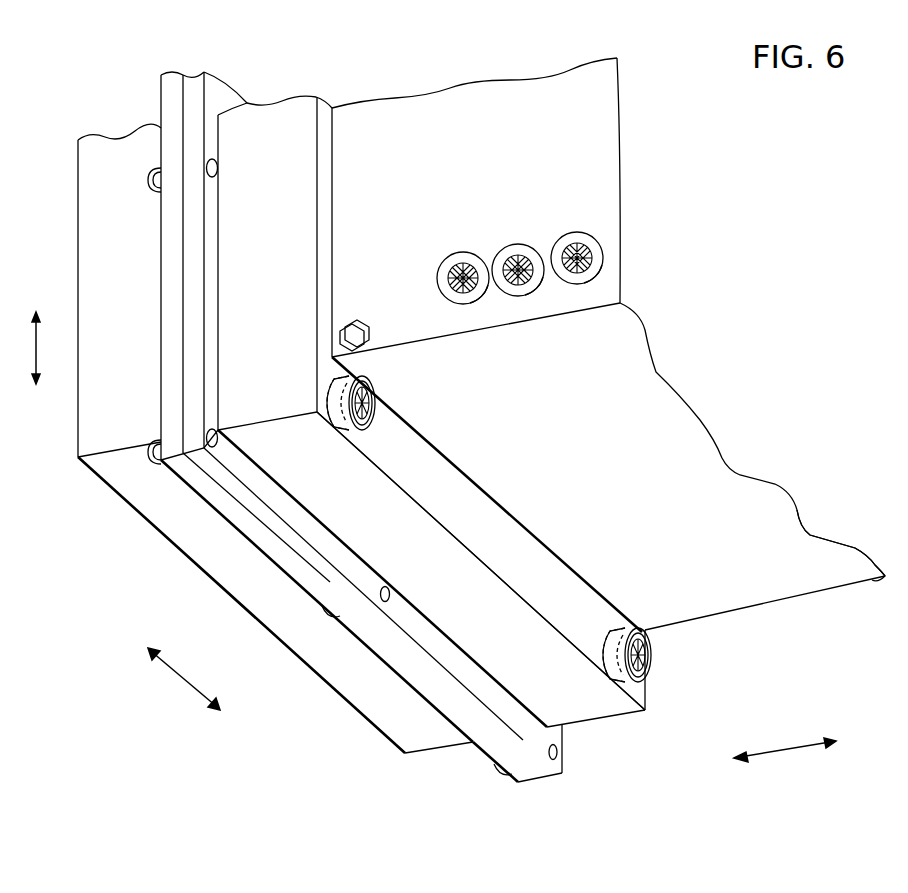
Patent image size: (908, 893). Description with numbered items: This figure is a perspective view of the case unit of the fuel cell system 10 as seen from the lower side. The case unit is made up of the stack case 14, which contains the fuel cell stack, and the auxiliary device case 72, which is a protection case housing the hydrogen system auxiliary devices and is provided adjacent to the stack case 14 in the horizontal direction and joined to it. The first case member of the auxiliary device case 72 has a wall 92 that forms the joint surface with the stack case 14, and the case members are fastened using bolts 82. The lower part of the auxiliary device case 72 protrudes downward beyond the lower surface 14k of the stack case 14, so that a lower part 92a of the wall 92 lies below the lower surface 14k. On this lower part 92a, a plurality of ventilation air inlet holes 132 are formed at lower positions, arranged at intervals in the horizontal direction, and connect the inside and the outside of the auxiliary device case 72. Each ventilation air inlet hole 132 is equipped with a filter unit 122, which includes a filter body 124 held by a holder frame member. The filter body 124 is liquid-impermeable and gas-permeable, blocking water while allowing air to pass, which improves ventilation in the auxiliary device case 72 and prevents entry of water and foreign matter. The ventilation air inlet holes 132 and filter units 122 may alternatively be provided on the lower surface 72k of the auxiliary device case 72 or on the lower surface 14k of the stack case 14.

The fuel cell system 10 is at (124, 84).
The stack case 14 is at (781, 586).
The lower surface of the stack case 14k is at (816, 586).
The auxiliary device case 72 is at (363, 688).
The lower surface of the auxiliary device case 72k is at (298, 477).
The bolts 82 is at (150, 180).
The wall 92 is at (441, 504).
The lower part of the joint surface 92a is at (487, 548).
The filter unit 122 is at (457, 252).
The filter body 124 is at (448, 280).
The ventilation air inlet holes 132 is at (335, 402).